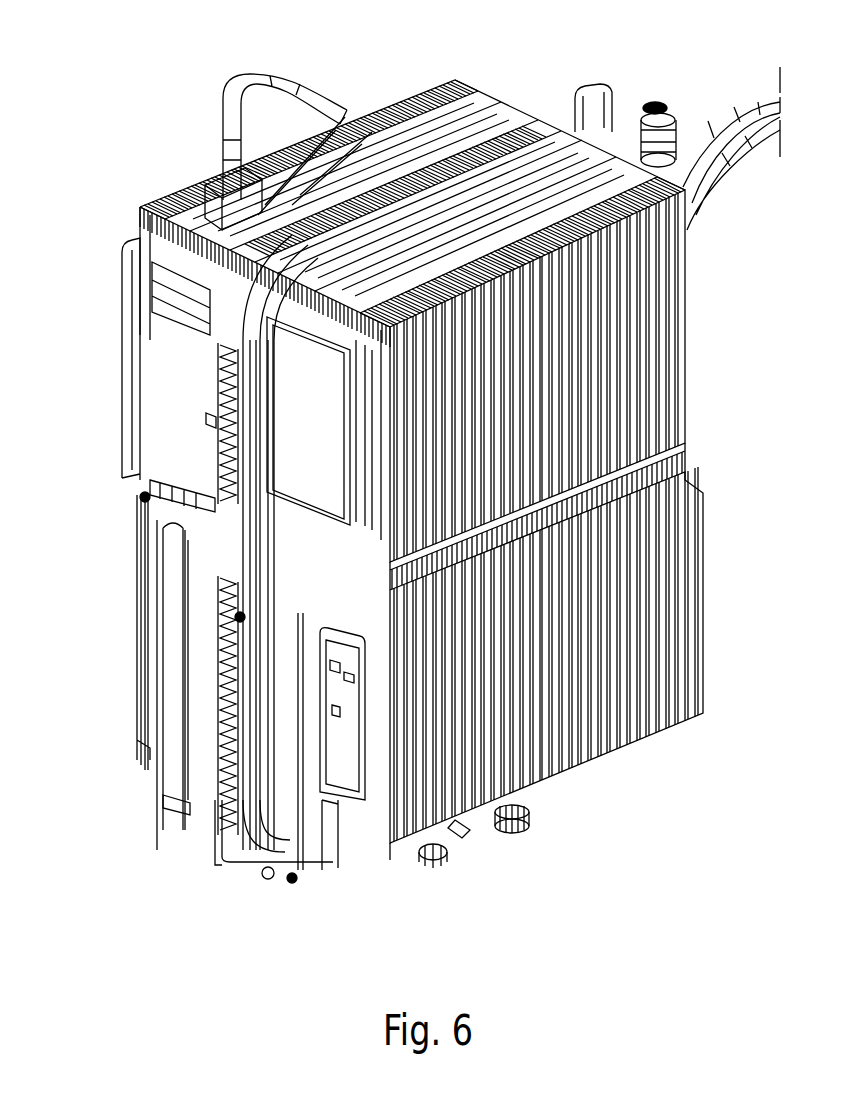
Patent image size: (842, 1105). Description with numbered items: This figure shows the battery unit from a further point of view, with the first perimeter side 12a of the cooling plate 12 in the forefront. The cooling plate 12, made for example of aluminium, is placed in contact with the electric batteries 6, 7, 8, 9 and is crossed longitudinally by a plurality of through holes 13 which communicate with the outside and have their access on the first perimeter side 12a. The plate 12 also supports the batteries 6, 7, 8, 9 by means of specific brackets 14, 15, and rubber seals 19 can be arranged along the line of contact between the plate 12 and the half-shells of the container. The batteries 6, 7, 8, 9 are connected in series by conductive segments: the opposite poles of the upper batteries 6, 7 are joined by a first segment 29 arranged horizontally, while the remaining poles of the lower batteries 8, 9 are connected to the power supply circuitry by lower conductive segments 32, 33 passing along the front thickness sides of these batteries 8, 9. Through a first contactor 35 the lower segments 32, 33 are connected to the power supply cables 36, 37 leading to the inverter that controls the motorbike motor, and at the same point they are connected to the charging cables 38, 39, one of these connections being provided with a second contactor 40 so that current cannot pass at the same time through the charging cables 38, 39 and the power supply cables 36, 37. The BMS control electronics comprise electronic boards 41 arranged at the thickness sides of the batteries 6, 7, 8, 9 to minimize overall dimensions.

The electric battery 6 is at (630, 341).
The electric battery 7 is at (490, 90).
The electric battery 8 is at (640, 612).
The electric battery 9 is at (150, 726).
The cooling plate 12 is at (190, 844).
The first perimeter side 12a is at (200, 417).
The through holes 13 is at (215, 407).
The bracket 14 is at (160, 500).
The bracket 15 is at (167, 800).
The rubber seal 19 is at (605, 112).
The first segment 29 is at (222, 190).
The lower conductive segment 32 is at (468, 832).
The lower conductive segment 33 is at (177, 657).
The first contactor 35 is at (433, 862).
The power supply cable 36 is at (758, 138).
The power supply cable 37 is at (750, 110).
The charging cable 38 is at (330, 130).
The charging cable 39 is at (265, 76).
The second contactor 40 is at (520, 828).
The electronic boards 41 is at (150, 288).